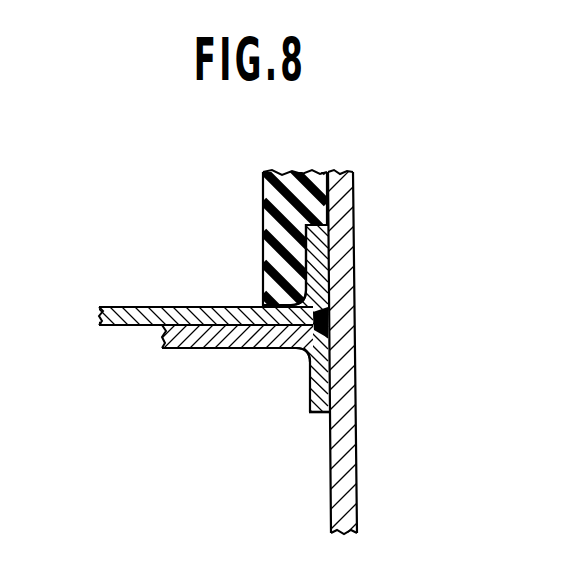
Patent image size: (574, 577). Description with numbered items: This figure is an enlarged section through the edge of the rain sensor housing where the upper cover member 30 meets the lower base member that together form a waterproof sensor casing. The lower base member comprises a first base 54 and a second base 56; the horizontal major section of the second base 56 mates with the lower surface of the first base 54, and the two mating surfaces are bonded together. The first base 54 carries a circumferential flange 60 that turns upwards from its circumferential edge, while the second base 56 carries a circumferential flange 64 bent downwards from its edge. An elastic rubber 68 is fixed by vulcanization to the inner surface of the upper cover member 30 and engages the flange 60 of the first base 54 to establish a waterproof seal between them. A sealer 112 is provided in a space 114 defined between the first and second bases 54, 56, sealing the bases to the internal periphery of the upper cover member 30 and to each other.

The upper cover member 30 is at (344, 385).
The elastic rubber 68 is at (308, 175).
The circumferential flange 60 is at (318, 255).
The first base 54 is at (184, 307).
The second base 56 is at (198, 340).
The sealer 112 is at (328, 324).
The space 114 is at (304, 353).
The circumferential flange 64 is at (318, 413).